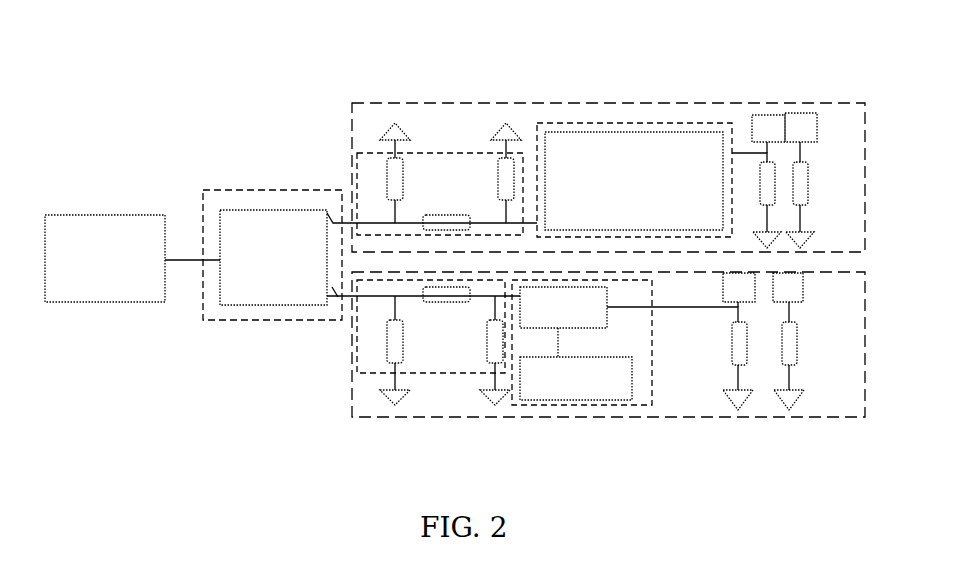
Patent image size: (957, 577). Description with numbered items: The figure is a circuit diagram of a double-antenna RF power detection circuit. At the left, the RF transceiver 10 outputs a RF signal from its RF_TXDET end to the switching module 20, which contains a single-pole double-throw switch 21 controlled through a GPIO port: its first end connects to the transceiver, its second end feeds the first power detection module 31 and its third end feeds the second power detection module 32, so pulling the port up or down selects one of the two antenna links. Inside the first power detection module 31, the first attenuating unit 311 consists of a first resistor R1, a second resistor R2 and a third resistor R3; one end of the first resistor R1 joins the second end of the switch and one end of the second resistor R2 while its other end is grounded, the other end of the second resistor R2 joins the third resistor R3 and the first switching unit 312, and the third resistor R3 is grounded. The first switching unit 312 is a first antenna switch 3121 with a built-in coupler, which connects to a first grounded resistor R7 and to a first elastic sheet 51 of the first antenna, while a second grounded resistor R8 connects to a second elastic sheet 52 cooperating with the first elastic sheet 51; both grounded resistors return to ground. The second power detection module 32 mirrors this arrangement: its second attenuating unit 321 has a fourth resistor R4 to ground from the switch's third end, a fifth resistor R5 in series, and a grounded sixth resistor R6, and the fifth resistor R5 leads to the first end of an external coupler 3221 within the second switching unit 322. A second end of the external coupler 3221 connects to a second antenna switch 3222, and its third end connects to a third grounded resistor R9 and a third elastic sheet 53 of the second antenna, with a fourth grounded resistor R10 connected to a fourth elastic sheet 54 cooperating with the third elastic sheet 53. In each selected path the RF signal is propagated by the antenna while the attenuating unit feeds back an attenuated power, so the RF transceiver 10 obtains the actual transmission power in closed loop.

The RF transceiver 10 is at (82, 213).
The switching module 20 is at (230, 188).
The single-pole double-throw switch 21 is at (253, 207).
The first power detection module 31 is at (547, 102).
The first attenuating unit 311 is at (437, 152).
The first switching unit 312 is at (588, 123).
The first antenna switch 3121 is at (660, 125).
The first elastic sheet 51 is at (767, 115).
The second elastic sheet 52 is at (812, 112).
The second power detection module 32 is at (667, 420).
The second attenuating unit 321 is at (430, 400).
The external coupler 3221 is at (612, 275).
The second switching unit 322 is at (550, 413).
The second antenna switch 3222 is at (597, 403).
The third elastic sheet 53 is at (757, 287).
The fourth elastic sheet 54 is at (803, 293).
The first resistor R1 is at (386, 173).
The second resistor R2 is at (446, 213).
The third resistor R3 is at (498, 173).
The fourth resistor R4 is at (386, 350).
The fifth resistor R5 is at (446, 308).
The sixth resistor R6 is at (488, 350).
The first grounded resistor R7 is at (772, 205).
The second grounded resistor R8 is at (810, 195).
The third grounded resistor R9 is at (744, 366).
The fourth grounded resistor R10 is at (799, 356).